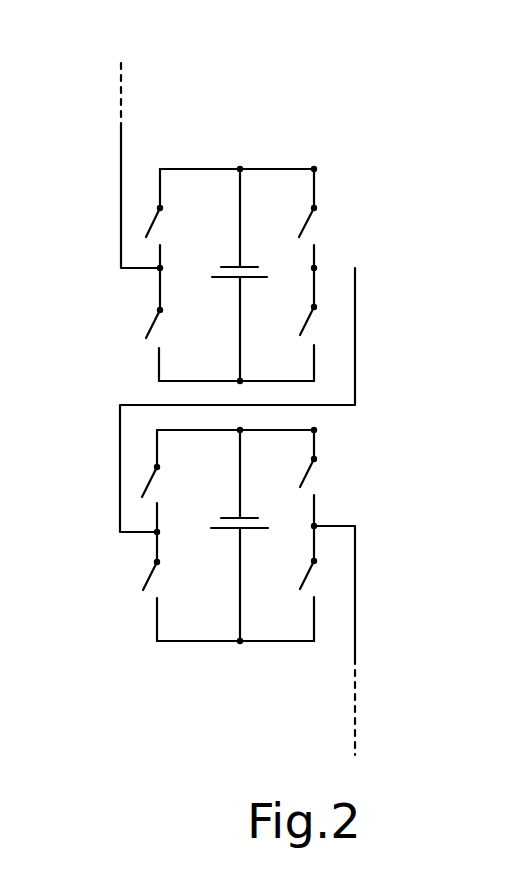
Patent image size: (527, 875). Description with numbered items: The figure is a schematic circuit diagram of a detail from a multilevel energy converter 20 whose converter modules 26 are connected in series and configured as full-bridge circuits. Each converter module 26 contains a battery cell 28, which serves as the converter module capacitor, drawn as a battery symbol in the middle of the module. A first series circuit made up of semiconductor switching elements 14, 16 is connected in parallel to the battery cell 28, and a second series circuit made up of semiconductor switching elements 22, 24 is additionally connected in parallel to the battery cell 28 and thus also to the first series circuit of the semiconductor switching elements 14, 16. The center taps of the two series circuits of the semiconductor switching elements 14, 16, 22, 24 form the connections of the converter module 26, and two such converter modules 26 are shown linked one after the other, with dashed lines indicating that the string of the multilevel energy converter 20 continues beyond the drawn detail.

The multilevel energy converter 20 is at (79, 94).
The converter module 26 is at (404, 263).
The battery cell 28 is at (262, 279).
The semiconductor switching element 14 is at (305, 231).
The semiconductor switching element 16 is at (307, 325).
The semiconductor switching element 22 is at (150, 231).
The semiconductor switching element 24 is at (150, 333).